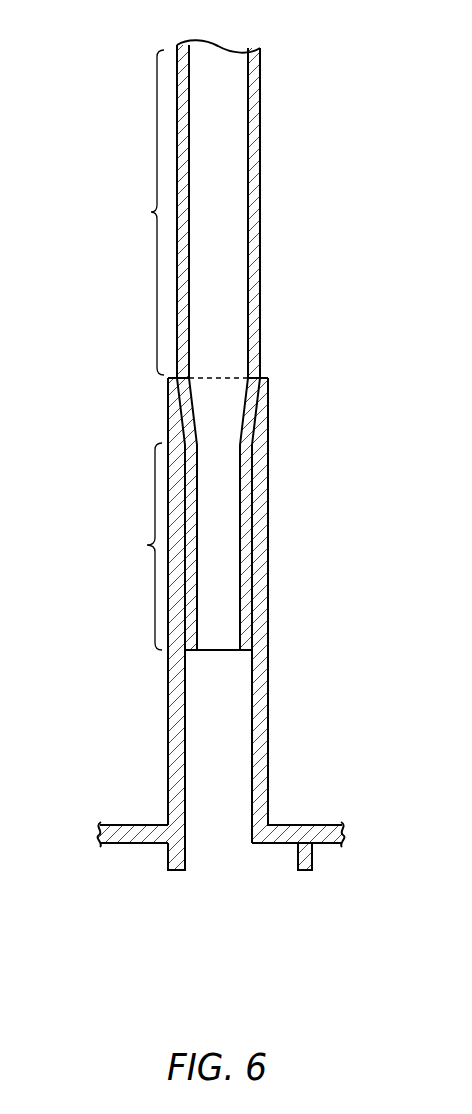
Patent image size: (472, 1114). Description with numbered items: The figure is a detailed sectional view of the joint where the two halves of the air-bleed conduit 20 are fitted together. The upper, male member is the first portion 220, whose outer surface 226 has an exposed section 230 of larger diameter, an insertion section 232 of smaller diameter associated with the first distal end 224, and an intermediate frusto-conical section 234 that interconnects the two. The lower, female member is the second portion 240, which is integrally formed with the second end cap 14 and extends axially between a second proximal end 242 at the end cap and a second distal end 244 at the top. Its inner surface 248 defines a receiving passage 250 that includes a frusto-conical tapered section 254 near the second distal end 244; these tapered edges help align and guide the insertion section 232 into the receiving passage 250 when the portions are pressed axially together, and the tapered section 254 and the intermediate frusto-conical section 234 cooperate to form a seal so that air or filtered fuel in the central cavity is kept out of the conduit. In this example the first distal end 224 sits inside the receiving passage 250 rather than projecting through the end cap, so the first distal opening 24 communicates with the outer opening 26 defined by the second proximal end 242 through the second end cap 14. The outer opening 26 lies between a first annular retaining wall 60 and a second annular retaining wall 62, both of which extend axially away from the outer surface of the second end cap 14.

The air-bleed conduit 20 is at (86, 85).
The first portion 220 is at (290, 229).
The outer surface 226 is at (261, 113).
The exposed section 230 is at (151, 211).
The second distal end 244 is at (267, 378).
The intermediate frusto-conical section 234 is at (188, 417).
The frusto-conical tapered section 254 is at (258, 404).
The insertion section 232 is at (147, 545).
The first distal end 224 is at (192, 640).
The first distal opening 24 is at (222, 652).
The second portion 240 is at (290, 547).
The receiving passage 250 is at (225, 697).
The inner surface 248 is at (257, 753).
The second proximal end 242 is at (268, 825).
The second end cap 14 is at (345, 833).
The second annular retaining wall 62 is at (312, 860).
The first annular retaining wall 60 is at (178, 870).
The outer opening 26 is at (218, 835).